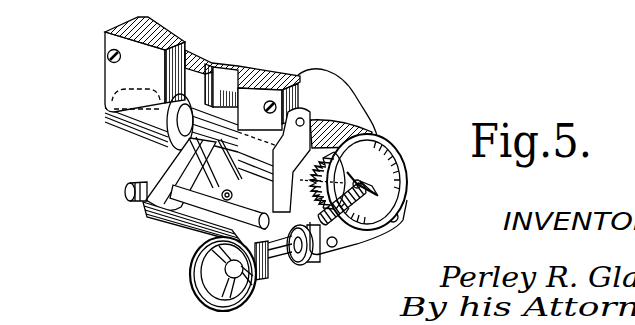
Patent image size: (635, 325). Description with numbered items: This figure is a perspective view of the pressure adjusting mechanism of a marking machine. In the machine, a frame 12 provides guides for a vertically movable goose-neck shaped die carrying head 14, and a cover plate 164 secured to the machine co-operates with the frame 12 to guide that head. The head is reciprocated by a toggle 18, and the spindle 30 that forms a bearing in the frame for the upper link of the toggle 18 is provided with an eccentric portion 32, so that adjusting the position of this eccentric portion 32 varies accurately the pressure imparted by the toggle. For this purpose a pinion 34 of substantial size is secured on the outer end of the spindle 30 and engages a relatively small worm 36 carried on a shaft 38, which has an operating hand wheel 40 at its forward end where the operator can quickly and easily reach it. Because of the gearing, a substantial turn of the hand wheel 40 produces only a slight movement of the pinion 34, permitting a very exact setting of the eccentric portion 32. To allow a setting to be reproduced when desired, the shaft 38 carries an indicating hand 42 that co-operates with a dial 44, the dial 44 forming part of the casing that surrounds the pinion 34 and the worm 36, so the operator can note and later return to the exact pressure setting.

The cover plate 164 is at (106, 38).
The eccentric portion 32 is at (220, 88).
The frame 12 is at (325, 93).
The spindle 30 is at (130, 124).
The die carrying head 14 is at (172, 162).
The toggle 18 is at (177, 198).
The hand wheel 40 is at (192, 272).
The shaft 38 is at (277, 266).
The pinion 34 is at (323, 183).
The worm 36 is at (327, 217).
The indicating hand 42 is at (383, 190).
The dial 44 is at (360, 208).